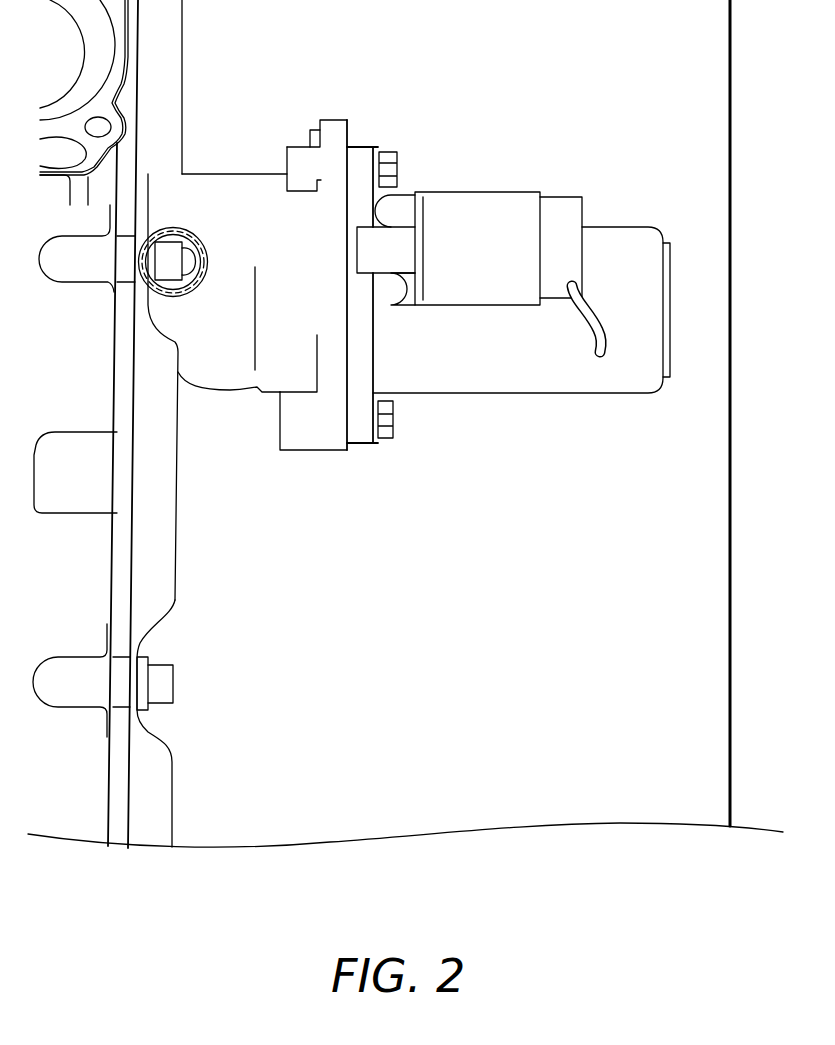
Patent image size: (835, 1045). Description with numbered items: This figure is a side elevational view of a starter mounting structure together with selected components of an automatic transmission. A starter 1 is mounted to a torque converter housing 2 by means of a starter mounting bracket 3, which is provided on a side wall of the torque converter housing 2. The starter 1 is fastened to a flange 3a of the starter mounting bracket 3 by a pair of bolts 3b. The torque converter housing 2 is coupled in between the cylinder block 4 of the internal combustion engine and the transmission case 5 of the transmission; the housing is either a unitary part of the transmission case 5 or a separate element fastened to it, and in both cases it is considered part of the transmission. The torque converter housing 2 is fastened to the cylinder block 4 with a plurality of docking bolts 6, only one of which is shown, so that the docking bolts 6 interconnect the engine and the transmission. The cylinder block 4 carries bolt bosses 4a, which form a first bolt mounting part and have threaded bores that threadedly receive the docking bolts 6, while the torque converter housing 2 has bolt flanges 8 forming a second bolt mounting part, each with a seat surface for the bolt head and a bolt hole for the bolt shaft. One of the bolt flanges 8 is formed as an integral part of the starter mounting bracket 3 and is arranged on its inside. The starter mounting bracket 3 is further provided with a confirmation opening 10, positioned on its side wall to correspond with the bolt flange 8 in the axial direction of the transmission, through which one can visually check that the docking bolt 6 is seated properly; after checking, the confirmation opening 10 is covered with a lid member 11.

The starter 1 is at (613, 226).
The torque converter housing 2 is at (429, 819).
The starter mounting bracket 3 is at (254, 167).
The flange 3a is at (350, 141).
The bolts 3b is at (399, 168).
The cylinder block 4 is at (86, 821).
The bolt bosses 4a is at (82, 283).
The transmission case 5 is at (771, 813).
The docking bolts 6 is at (162, 256).
The bolt flanges 8 is at (143, 688).
The confirmation opening 10 is at (206, 252).
The lid member 11 is at (185, 232).